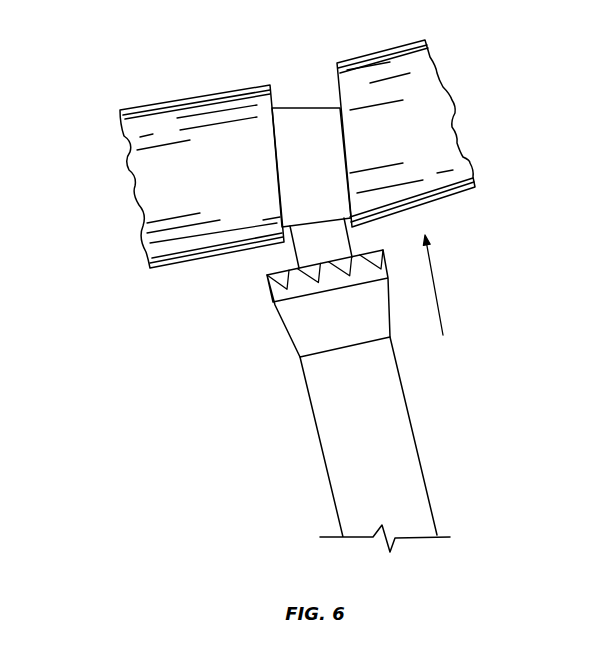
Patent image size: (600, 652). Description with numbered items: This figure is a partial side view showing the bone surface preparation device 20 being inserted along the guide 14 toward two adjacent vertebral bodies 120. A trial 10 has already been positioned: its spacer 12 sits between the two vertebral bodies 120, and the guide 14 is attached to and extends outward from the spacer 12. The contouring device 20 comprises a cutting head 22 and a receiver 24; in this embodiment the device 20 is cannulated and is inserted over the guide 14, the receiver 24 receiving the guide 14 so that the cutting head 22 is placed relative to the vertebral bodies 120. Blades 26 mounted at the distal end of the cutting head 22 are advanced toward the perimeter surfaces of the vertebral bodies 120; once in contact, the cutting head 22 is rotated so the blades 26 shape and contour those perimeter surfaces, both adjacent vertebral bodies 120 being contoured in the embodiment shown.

The trial 10 is at (269, 189).
The spacer 12 is at (315, 118).
The guide 14 is at (310, 250).
The contouring device 20 is at (353, 393).
The cutting head 22 is at (303, 330).
The receiver 24 is at (405, 467).
The blades 26 is at (275, 305).
The vertebral bodies 120 is at (160, 182).